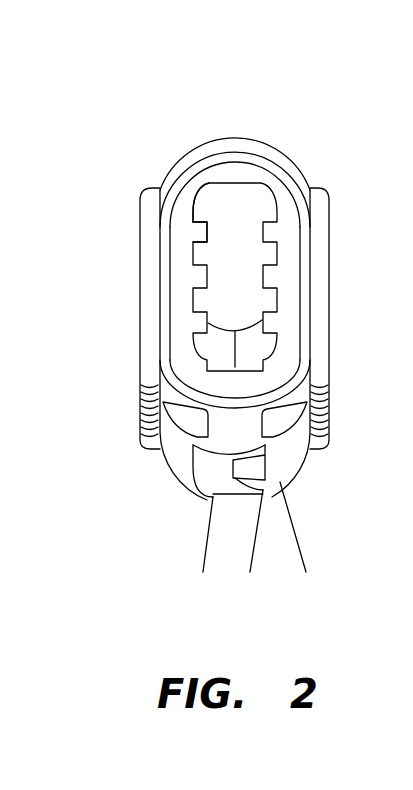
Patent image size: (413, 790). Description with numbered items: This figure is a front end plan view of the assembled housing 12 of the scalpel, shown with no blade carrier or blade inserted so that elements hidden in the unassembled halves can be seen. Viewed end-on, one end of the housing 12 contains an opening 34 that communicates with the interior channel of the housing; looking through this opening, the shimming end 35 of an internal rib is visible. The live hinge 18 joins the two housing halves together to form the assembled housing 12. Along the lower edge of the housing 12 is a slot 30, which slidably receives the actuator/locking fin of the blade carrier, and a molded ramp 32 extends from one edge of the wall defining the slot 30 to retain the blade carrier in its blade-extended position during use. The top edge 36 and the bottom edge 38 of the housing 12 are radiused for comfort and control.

The housing 12 is at (322, 130).
The live hinge 18 is at (232, 178).
The slot 30 is at (203, 572).
The molded ramp 32 is at (250, 572).
The opening 34 is at (217, 197).
The shimming end of a rib 35 is at (207, 242).
The top edge 36 is at (267, 145).
The bottom edge 38 is at (306, 572).